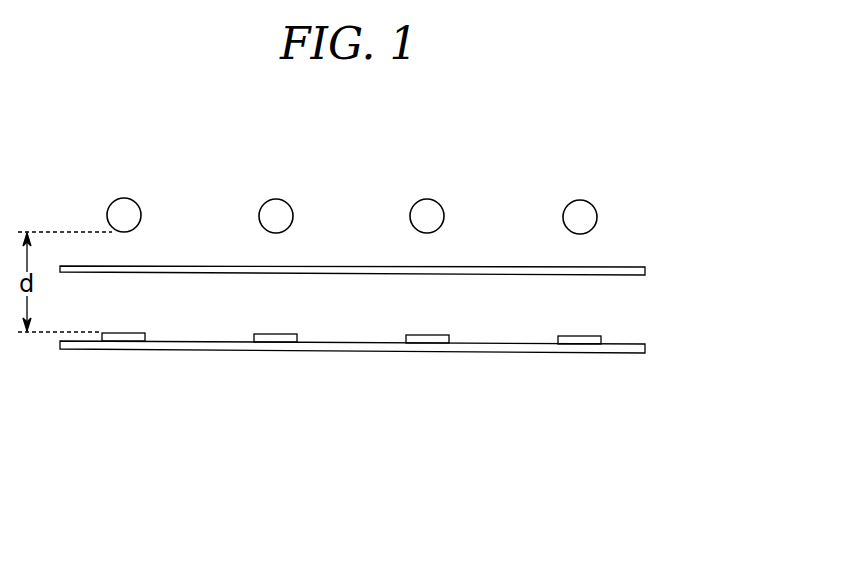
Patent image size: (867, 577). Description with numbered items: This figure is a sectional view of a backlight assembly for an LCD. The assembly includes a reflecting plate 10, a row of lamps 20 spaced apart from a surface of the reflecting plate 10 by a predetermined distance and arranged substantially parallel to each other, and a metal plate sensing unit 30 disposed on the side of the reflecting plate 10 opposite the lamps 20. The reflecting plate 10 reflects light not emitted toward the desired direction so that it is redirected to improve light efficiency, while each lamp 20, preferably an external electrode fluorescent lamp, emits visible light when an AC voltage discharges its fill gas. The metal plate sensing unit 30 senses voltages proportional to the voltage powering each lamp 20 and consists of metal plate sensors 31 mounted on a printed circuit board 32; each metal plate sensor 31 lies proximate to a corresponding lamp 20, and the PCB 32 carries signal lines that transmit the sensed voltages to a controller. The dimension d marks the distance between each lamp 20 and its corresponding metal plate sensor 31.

The reflecting plate 10 is at (645, 271).
The lamps 20 is at (597, 217).
The metal plate sensing unit 30 is at (402, 330).
The metal plate sensors 31 is at (583, 335).
The printed circuit board 32 is at (645, 349).